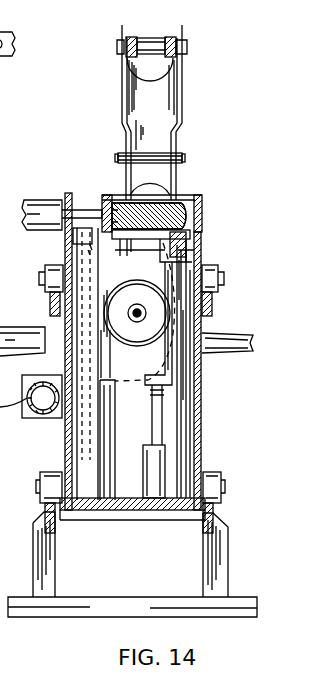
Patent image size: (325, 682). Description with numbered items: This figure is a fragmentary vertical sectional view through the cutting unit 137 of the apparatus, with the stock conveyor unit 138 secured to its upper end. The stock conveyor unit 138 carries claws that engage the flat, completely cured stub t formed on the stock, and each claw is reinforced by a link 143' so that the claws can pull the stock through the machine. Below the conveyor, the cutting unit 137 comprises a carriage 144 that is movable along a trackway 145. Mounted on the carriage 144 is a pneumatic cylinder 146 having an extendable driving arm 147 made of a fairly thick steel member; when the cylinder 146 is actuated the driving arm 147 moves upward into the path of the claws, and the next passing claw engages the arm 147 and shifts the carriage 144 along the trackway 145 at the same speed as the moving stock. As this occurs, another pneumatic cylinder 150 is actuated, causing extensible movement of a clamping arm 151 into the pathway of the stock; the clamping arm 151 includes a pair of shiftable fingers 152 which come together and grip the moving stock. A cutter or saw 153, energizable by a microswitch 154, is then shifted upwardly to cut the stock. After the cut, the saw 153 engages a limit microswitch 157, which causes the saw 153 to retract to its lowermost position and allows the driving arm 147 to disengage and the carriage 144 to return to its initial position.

The stock conveyor unit 138 is at (120, 108).
The link 143' is at (206, 112).
The cutting unit 137 is at (202, 153).
The shiftable fingers 152 is at (180, 205).
The stub t is at (190, 216).
The pneumatic cylinder 150 is at (40, 200).
The clamping arm 151 is at (85, 210).
The limit microswitch 157 is at (80, 240).
The microswitch 154 is at (185, 258).
The driving arm 147 is at (147, 250).
The trackway 145 is at (208, 318).
The saw 153 is at (178, 370).
The carriage 144 is at (202, 432).
The pneumatic cylinder 146 is at (157, 467).